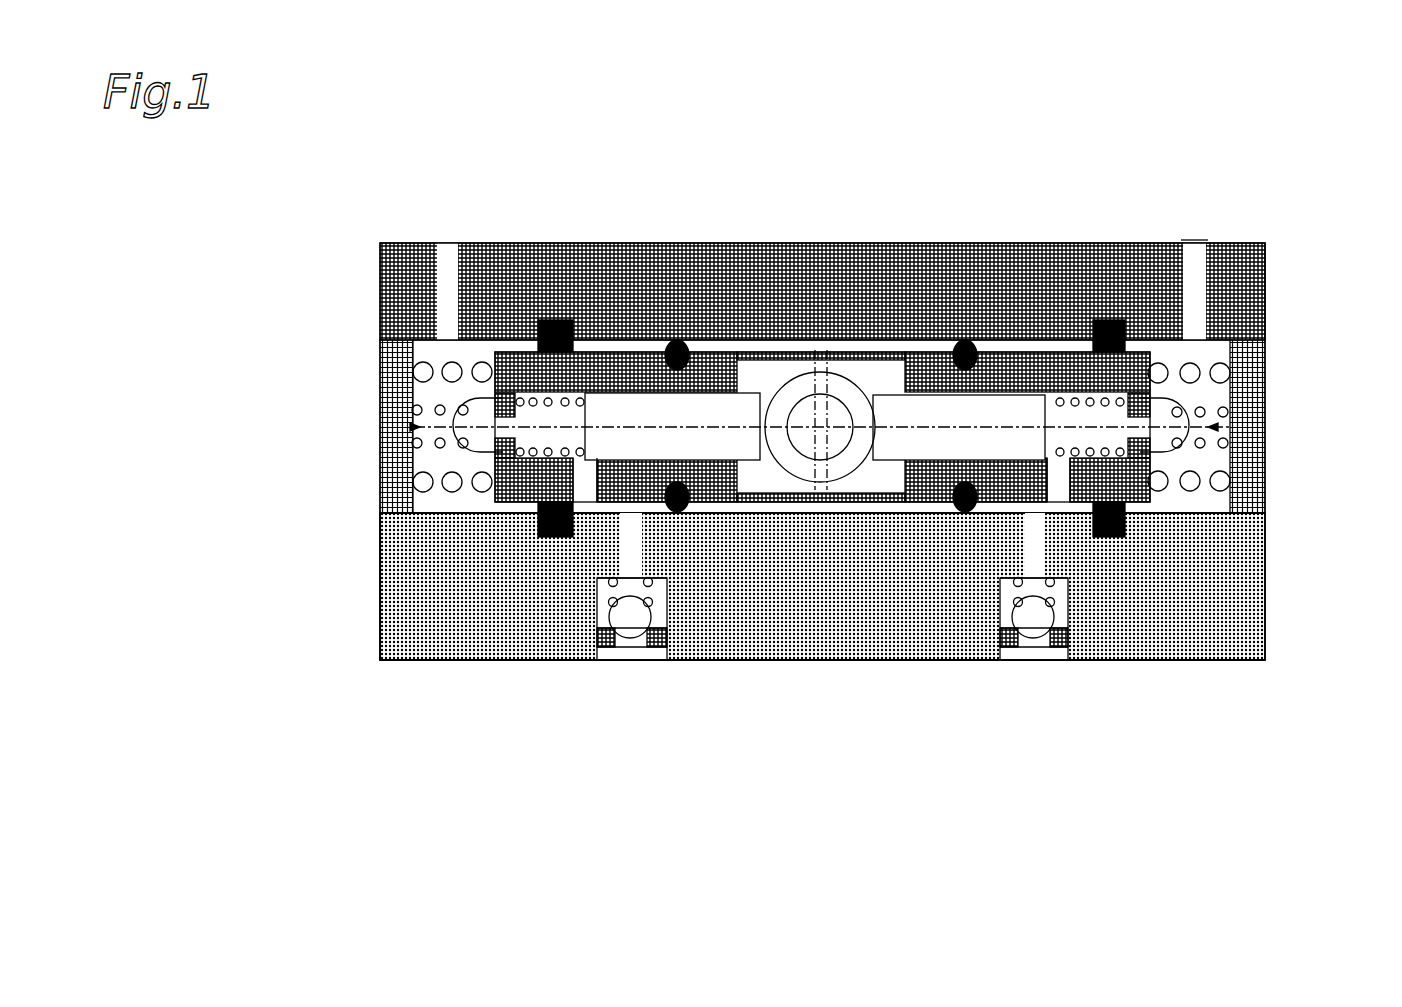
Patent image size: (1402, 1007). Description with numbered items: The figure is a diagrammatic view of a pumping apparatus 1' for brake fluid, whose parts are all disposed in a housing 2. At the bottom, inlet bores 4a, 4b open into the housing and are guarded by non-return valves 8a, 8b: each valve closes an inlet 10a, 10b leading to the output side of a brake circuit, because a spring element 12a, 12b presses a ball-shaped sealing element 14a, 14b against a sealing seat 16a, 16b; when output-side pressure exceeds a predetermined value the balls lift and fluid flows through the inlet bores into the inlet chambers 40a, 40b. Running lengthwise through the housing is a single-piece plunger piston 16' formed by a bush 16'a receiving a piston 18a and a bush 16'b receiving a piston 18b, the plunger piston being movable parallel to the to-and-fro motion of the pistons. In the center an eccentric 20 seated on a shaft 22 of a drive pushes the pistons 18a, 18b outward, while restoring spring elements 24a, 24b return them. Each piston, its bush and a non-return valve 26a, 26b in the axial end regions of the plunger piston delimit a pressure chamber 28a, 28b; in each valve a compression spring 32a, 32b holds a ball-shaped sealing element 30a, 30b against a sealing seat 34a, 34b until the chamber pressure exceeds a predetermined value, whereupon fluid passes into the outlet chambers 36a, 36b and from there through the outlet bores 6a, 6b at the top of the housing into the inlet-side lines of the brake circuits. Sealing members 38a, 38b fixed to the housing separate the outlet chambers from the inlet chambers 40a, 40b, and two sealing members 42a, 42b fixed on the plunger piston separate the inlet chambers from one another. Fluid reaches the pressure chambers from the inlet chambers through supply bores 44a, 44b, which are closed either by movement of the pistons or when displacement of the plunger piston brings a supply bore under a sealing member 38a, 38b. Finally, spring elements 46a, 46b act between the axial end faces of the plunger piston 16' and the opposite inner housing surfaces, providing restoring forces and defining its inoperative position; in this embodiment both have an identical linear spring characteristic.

The pumping apparatus 1' is at (822, 569).
The housing 2 is at (820, 425).
The inlet bore 4a is at (783, 660).
The inlet bore 4b is at (993, 660).
The outlet bore 6a is at (447, 240).
The outlet bore 6b is at (1197, 240).
The non-return valve 8a is at (738, 660).
The non-return valve 8b is at (1130, 660).
The inlet 10a is at (660, 660).
The inlet 10b is at (1043, 660).
The spring element 12a is at (593, 663).
The spring element 12b is at (1033, 660).
The sealing element 14a is at (612, 660).
The sealing element 14b is at (1095, 660).
The sealing seat 16a is at (405, 660).
The sealing seat 16b is at (1183, 330).
The plunger piston 16' is at (822, 224).
The bush 16'a is at (672, 295).
The bush 16'b is at (985, 290).
The piston 18a is at (702, 243).
The piston 18b is at (913, 243).
The eccentric 20 is at (838, 385).
The shaft 22 is at (757, 243).
The restoring spring element 24a is at (513, 243).
The restoring spring element 24b is at (985, 243).
The non-return valve 26a is at (410, 427).
The non-return valve 26b is at (1218, 427).
The pressure chamber 28a is at (630, 243).
The pressure chamber 28b is at (1043, 243).
The sealing element 30a is at (480, 440).
The sealing element 30b is at (1180, 435).
The compression spring 32a is at (420, 412).
The compression spring 32b is at (1230, 412).
The sealing seat 34a is at (410, 548).
The sealing seat 34b is at (1260, 513).
The outlet chamber 36a is at (410, 352).
The outlet chamber 36b is at (1218, 353).
The sealing member 38a is at (477, 665).
The sealing member 38b is at (1262, 602).
The inlet chamber 40a is at (842, 660).
The inlet chamber 40b is at (972, 660).
The sealing member 42a is at (898, 660).
The sealing member 42b is at (947, 660).
The supply bore 44a is at (530, 665).
The supply bore 44b is at (1227, 660).
The spring element 46a is at (423, 372).
The spring element 46b is at (1222, 375).